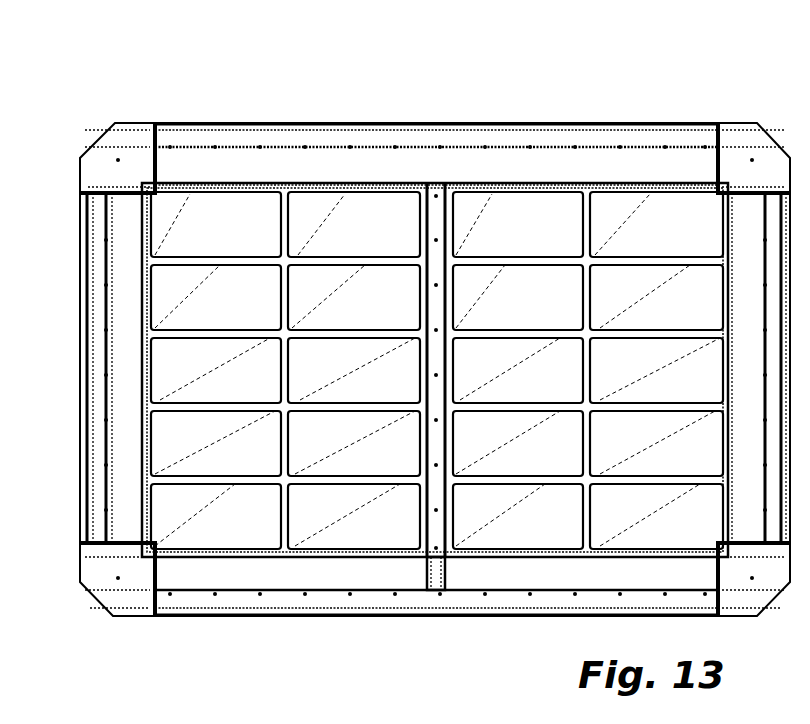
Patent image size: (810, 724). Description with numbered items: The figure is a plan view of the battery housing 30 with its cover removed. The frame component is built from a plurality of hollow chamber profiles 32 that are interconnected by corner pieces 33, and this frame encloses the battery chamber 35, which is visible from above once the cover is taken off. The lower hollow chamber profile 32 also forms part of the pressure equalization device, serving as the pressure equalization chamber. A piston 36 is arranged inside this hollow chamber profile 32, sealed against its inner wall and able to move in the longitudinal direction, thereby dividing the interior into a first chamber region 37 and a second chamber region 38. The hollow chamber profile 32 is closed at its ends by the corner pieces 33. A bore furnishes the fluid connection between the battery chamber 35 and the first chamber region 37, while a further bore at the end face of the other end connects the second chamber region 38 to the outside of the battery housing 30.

The battery housing 30 is at (215, 110).
The hollow chamber profile 32 is at (458, 123).
The corner piece 33 is at (95, 130).
The battery chamber 35 is at (355, 187).
The piston 36 is at (427, 567).
The first chamber region 37 is at (590, 583).
The second chamber region 38 is at (320, 583).